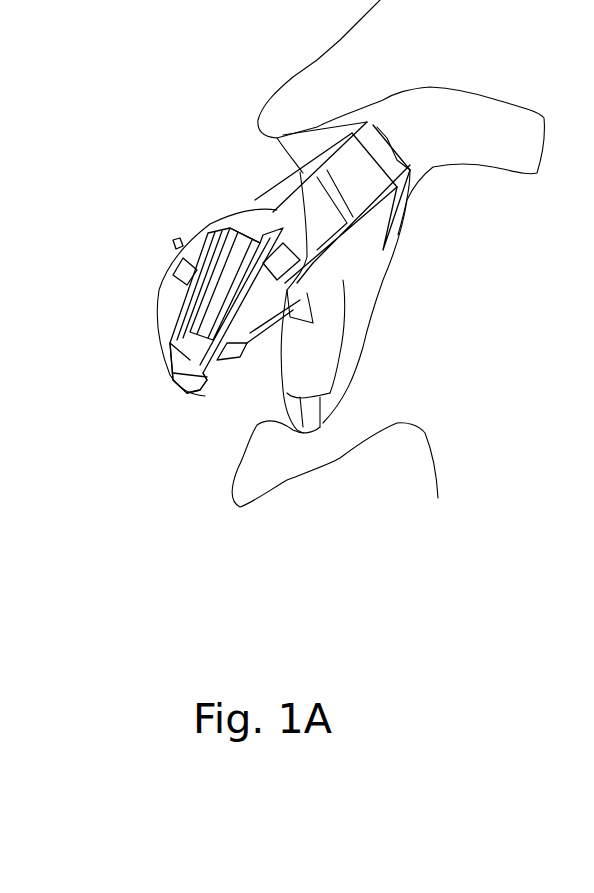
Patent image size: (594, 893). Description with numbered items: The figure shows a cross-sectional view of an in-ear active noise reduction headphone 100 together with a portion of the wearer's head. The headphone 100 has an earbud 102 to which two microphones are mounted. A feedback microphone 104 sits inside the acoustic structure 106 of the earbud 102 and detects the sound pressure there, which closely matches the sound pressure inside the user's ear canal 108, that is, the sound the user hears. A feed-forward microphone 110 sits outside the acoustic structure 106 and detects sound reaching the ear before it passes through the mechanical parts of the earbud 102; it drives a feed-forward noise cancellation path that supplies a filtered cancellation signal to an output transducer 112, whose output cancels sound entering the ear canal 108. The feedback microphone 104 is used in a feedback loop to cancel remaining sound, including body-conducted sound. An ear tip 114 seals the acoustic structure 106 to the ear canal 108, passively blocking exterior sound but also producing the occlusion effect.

The active noise reduction headphone 100 is at (186, 175).
The earbud 102 is at (173, 378).
The feedback microphone 104 is at (288, 267).
The acoustic structure 106 is at (238, 350).
The ear canal 108 is at (474, 146).
The feed-forward microphone 110 is at (155, 287).
The output transducer 112 is at (195, 340).
The ear tip 114 is at (390, 220).